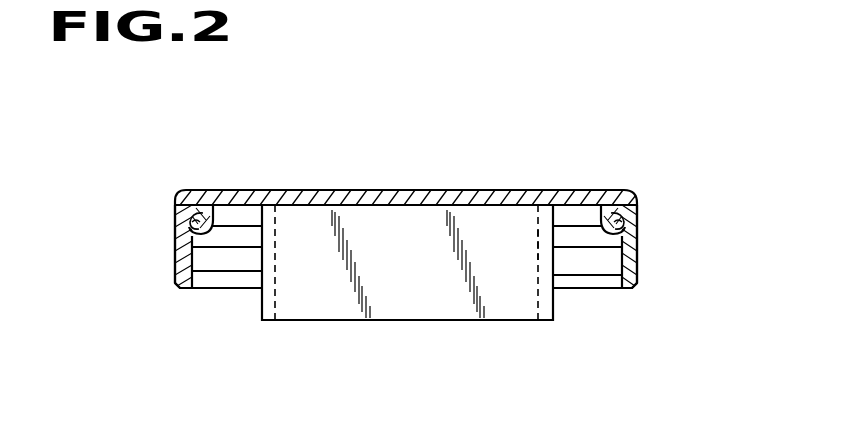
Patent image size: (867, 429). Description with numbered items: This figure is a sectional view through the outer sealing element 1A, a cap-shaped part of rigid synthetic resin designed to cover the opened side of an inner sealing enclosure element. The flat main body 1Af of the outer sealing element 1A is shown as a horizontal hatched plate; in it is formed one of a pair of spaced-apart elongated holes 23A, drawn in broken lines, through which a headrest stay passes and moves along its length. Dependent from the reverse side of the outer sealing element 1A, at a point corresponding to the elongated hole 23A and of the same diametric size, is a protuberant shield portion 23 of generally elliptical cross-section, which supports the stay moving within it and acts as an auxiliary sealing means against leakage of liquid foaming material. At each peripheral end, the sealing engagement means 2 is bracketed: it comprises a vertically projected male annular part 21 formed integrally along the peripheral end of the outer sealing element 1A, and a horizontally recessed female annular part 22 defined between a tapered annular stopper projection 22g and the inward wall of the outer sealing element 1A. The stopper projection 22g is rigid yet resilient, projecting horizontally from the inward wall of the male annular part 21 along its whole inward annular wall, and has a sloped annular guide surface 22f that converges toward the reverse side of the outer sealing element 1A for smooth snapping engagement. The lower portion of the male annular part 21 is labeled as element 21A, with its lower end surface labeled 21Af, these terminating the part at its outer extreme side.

The outer sealing element 1A is at (559, 178).
The flat main body 1Af is at (234, 188).
The sealing engagement means 2 is at (58, 133).
The male annular part 21 is at (182, 209).
The frame lower wall portion 21A is at (180, 271).
The frame lower wall surface 21Af is at (188, 295).
The female annular part 22 is at (187, 236).
The sloped annular guide surface 22f is at (185, 195).
The tapered annular stopper projection 22g is at (180, 203).
The protuberant shield portion 23 is at (447, 305).
The elongated hole 23A is at (538, 234).